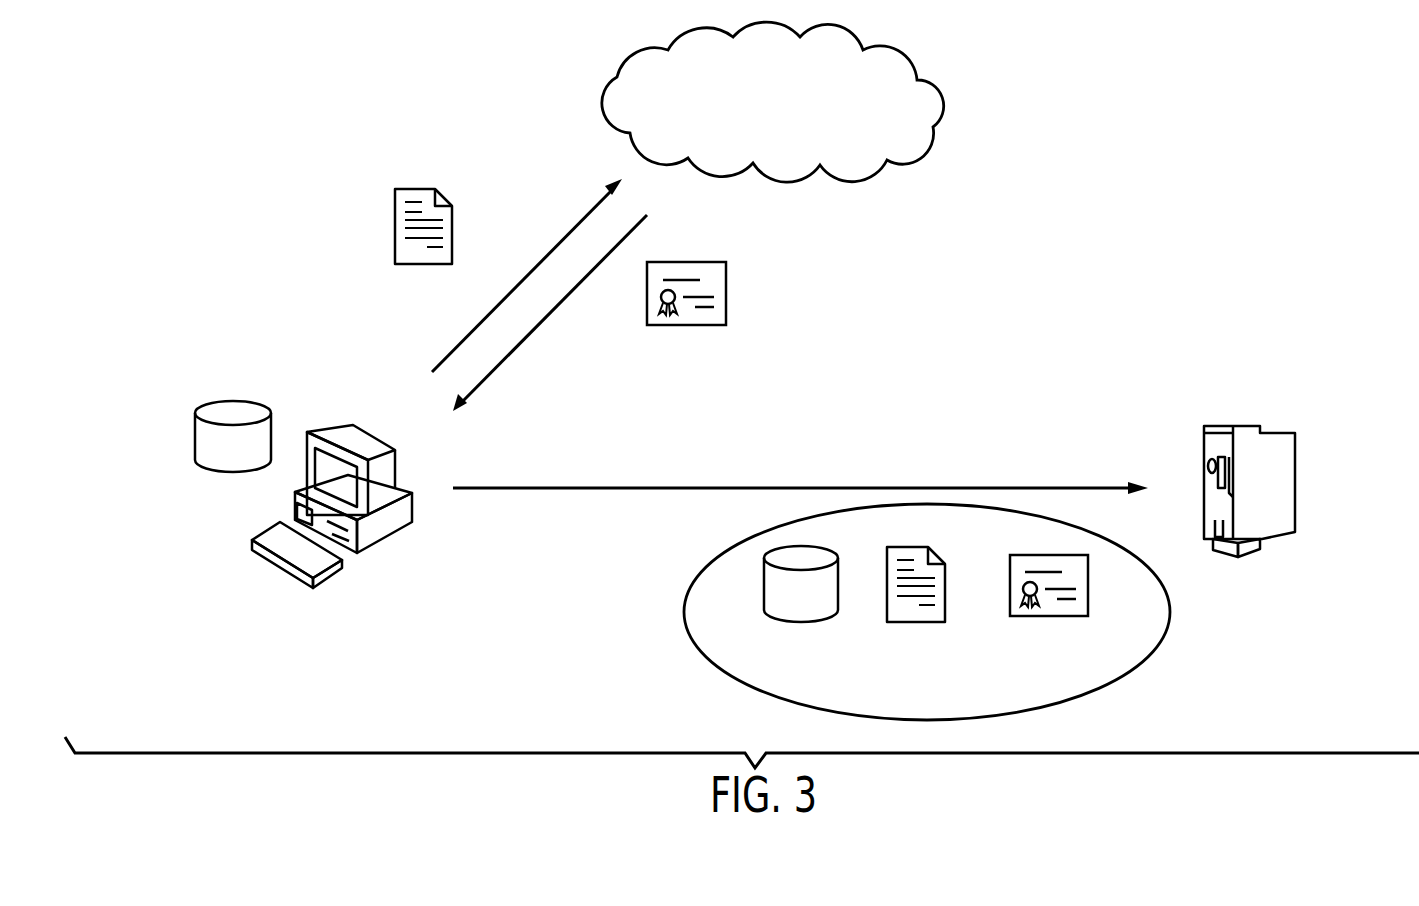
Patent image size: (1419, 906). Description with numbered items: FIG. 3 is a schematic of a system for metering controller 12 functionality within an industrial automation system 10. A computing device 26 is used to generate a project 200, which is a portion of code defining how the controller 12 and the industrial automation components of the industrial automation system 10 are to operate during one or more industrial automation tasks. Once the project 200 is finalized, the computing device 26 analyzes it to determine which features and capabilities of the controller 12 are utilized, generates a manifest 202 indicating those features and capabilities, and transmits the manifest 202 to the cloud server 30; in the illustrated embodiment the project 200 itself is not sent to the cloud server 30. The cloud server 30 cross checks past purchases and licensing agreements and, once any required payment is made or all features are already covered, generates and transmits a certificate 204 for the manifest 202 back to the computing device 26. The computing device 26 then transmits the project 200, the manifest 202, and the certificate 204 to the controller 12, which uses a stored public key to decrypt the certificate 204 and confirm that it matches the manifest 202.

The industrial automation system 10 is at (1302, 324).
The controller 12 is at (1265, 448).
The computing device 26 is at (322, 432).
The cloud server 30 is at (900, 50).
The project 200 is at (232, 400).
The manifest 202 is at (417, 187).
The certificate 204 is at (685, 262).